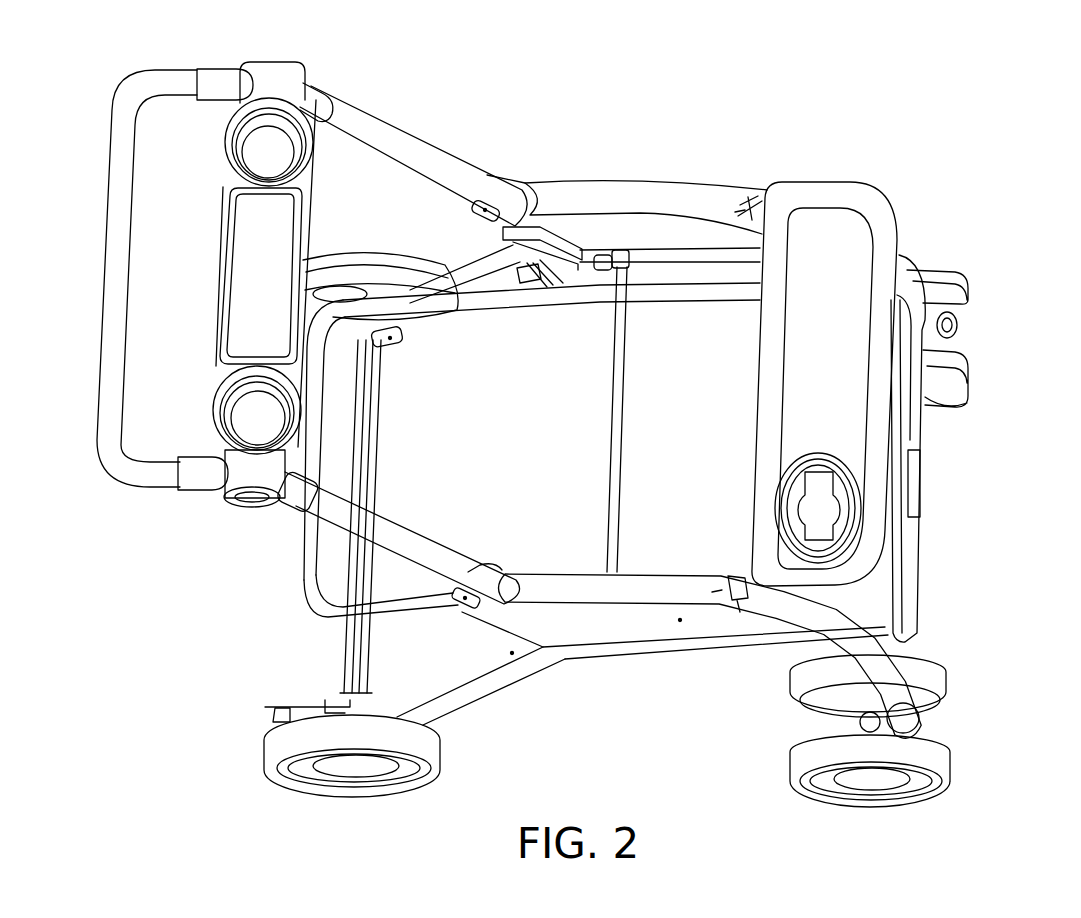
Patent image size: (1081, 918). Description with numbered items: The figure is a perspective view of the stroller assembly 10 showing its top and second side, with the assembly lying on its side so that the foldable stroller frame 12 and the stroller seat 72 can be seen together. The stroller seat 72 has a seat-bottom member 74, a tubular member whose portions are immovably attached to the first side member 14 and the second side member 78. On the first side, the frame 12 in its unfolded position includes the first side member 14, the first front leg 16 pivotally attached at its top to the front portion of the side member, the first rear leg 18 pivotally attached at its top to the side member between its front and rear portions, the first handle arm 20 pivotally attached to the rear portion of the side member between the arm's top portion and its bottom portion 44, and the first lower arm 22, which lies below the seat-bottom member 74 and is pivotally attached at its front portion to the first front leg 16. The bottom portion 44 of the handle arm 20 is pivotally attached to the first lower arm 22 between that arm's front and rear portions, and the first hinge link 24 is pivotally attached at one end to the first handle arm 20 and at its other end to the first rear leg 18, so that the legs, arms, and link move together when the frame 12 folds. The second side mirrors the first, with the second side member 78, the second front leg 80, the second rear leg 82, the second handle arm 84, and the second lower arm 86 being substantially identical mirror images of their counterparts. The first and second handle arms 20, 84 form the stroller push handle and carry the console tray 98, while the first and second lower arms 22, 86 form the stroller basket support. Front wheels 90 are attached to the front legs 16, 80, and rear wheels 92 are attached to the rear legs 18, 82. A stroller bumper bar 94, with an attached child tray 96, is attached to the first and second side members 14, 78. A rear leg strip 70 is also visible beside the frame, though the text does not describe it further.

The stroller assembly 10 is at (962, 140).
The stroller frame 12 is at (653, 652).
The first side member 14 is at (657, 181).
The first front leg 16 is at (913, 280).
The first rear leg 18 is at (490, 260).
The first handle arm 20 is at (383, 128).
The first lower arm 22 is at (690, 303).
The first hinge link 24 is at (531, 280).
The bottom portion of first handle arm 44 is at (566, 288).
The rear leg strip 70 is at (893, 553).
The stroller seat 72 is at (708, 248).
The seat-bottom member 74 is at (641, 250).
The second side member 78 is at (578, 645).
The second front leg 80 is at (910, 682).
The second rear leg 82 is at (462, 680).
The second handle arm 84 is at (413, 550).
The second lower arm 86 is at (415, 610).
The front wheels 90 is at (960, 276).
The rear wheels 92 is at (368, 250).
The stroller bumper bar 94 is at (735, 575).
The child tray 96 is at (757, 452).
The console tray 98 is at (215, 278).